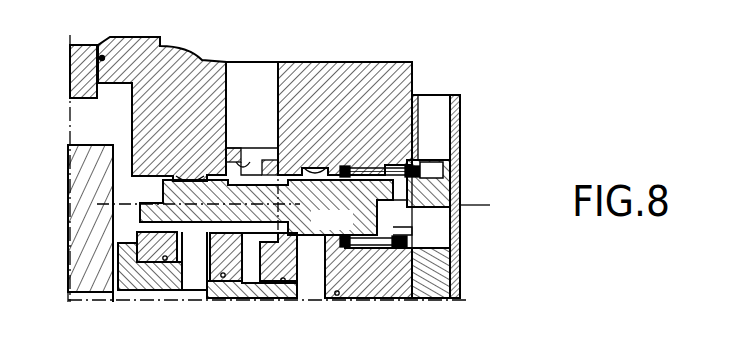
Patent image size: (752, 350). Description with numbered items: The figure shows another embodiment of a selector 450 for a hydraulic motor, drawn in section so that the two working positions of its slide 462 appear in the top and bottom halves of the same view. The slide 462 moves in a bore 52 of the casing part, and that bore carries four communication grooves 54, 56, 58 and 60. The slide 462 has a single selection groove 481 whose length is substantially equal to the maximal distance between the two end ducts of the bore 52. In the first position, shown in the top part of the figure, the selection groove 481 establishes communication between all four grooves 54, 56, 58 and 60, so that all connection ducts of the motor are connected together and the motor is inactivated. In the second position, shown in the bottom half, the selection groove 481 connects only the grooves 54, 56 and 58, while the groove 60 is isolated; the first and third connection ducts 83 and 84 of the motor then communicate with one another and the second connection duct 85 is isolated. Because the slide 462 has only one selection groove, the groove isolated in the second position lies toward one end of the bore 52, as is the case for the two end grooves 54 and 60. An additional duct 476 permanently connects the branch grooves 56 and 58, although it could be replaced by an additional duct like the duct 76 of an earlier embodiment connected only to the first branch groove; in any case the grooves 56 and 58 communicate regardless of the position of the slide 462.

The bore 52 is at (148, 194).
The groove 54 is at (187, 173).
The groove 56 is at (272, 174).
The groove 58 is at (285, 173).
The groove 60 is at (340, 170).
The additional duct 76 is at (264, 346).
The connection duct 83 is at (195, 266).
The connection duct 84 is at (250, 283).
The connection duct 85 is at (320, 255).
The selector 450 is at (470, 143).
The slide 462 is at (460, 195).
The additional duct 476 is at (257, 80).
The selection groove 481 is at (295, 195).